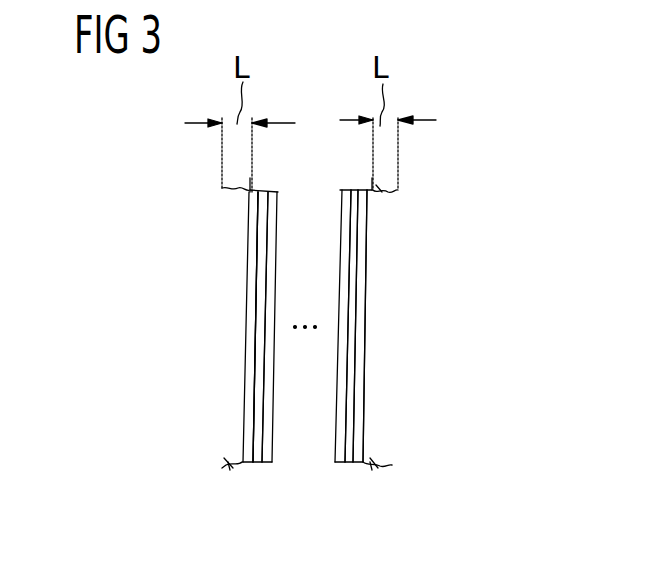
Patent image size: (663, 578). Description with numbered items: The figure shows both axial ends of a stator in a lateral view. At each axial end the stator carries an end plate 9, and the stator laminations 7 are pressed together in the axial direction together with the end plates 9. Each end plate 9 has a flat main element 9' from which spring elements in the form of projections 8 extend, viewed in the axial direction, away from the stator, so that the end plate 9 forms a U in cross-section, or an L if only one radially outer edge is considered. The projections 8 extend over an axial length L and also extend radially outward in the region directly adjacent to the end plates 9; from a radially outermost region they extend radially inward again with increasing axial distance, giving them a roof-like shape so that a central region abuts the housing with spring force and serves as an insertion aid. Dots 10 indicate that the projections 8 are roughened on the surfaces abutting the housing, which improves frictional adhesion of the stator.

The stator laminations 7 is at (263, 224).
The projections 8 is at (222, 186).
The end plate 9 is at (345, 326).
The flat main element 9' is at (355, 326).
The dots 10 is at (252, 178).